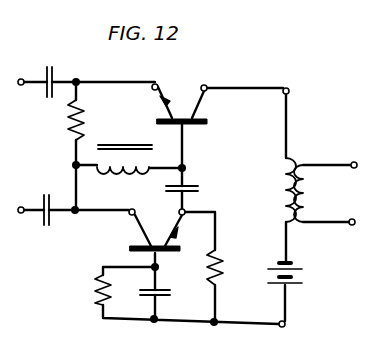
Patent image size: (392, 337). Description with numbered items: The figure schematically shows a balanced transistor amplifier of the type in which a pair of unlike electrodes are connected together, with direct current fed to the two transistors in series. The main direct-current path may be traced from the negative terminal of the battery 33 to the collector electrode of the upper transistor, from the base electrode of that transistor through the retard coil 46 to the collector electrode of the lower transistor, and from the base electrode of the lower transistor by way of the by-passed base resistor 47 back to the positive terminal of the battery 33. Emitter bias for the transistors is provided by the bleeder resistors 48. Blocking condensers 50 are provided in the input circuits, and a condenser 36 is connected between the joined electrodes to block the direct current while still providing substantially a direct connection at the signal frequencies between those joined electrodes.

The blocking condenser 50 is at (49, 66).
The bleeder resistor 48 is at (66, 122).
The retard coil 46 is at (123, 181).
The condenser 36 is at (199, 189).
The by-passed base resistor 47 is at (97, 293).
The battery 33 is at (303, 278).